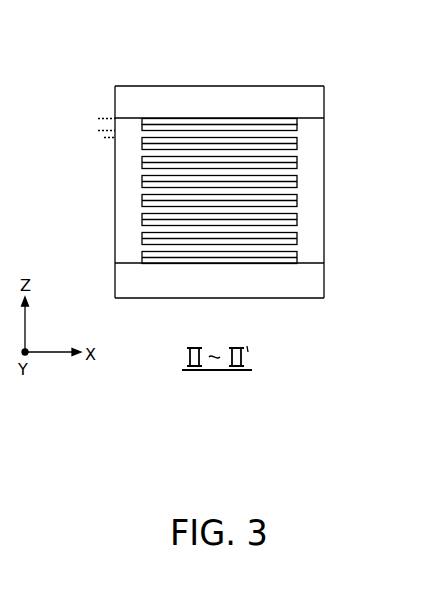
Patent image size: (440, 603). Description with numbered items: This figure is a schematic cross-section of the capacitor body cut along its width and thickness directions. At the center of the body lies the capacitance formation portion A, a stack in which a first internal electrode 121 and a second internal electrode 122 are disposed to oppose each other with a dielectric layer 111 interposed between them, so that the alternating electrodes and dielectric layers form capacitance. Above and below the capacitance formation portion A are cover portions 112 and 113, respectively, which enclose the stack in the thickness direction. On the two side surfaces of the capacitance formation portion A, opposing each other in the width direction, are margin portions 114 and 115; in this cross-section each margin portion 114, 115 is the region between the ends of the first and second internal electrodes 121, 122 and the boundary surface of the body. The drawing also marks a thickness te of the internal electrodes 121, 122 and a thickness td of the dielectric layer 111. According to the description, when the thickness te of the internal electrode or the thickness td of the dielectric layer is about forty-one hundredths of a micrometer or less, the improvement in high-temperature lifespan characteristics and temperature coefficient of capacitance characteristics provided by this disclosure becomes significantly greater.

The dielectric layer 111 is at (260, 178).
The cover portion 112 is at (223, 86).
The cover portion 113 is at (319, 279).
The margin portion 114 is at (128, 226).
The margin portion 115 is at (319, 213).
The first internal electrode 121 is at (298, 118).
The second internal electrode 122 is at (298, 138).
The capacitance formation portion A is at (141, 194).
The thickness of the internal electrode te is at (98, 119).
The thickness of the dielectric layer td is at (98, 131).